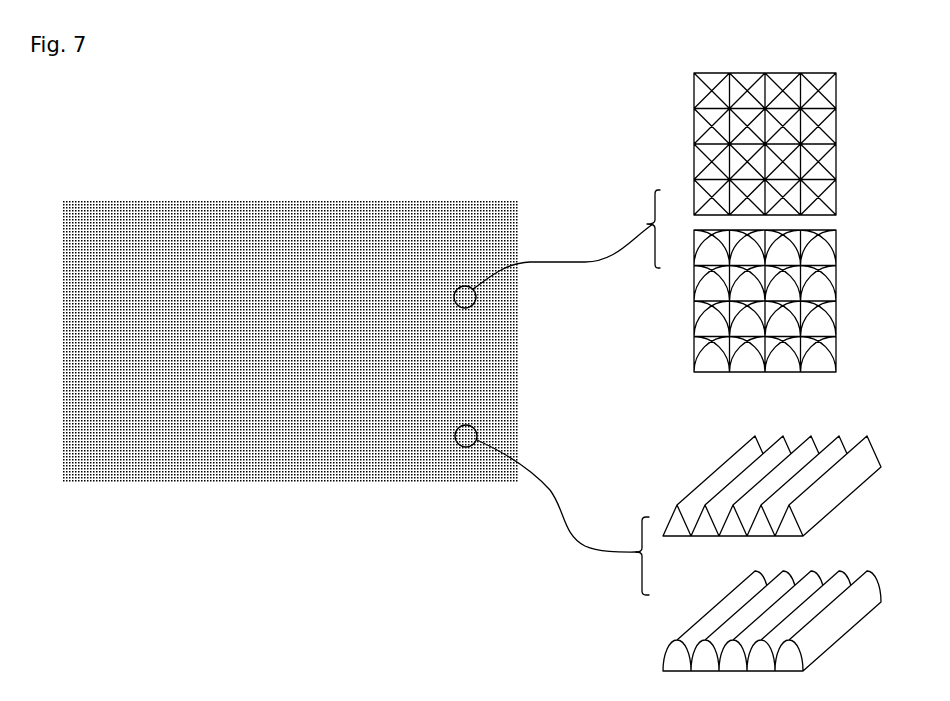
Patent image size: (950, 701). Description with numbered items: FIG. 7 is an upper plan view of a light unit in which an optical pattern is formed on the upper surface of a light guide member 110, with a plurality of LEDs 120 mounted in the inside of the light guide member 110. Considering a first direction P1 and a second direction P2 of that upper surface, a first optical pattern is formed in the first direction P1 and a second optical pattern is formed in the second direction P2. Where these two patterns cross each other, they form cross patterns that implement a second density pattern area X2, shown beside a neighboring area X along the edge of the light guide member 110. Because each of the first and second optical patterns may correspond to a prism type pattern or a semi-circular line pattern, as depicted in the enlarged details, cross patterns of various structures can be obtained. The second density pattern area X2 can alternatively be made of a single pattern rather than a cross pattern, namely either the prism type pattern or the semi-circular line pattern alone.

The light guide member 110 is at (508, 203).
The LEDs 120 is at (508, 233).
The first direction P1 is at (106, 186).
The second direction P2 is at (53, 241).
The pattern width X is at (522, 288).
The second density pattern area X2 is at (522, 307).